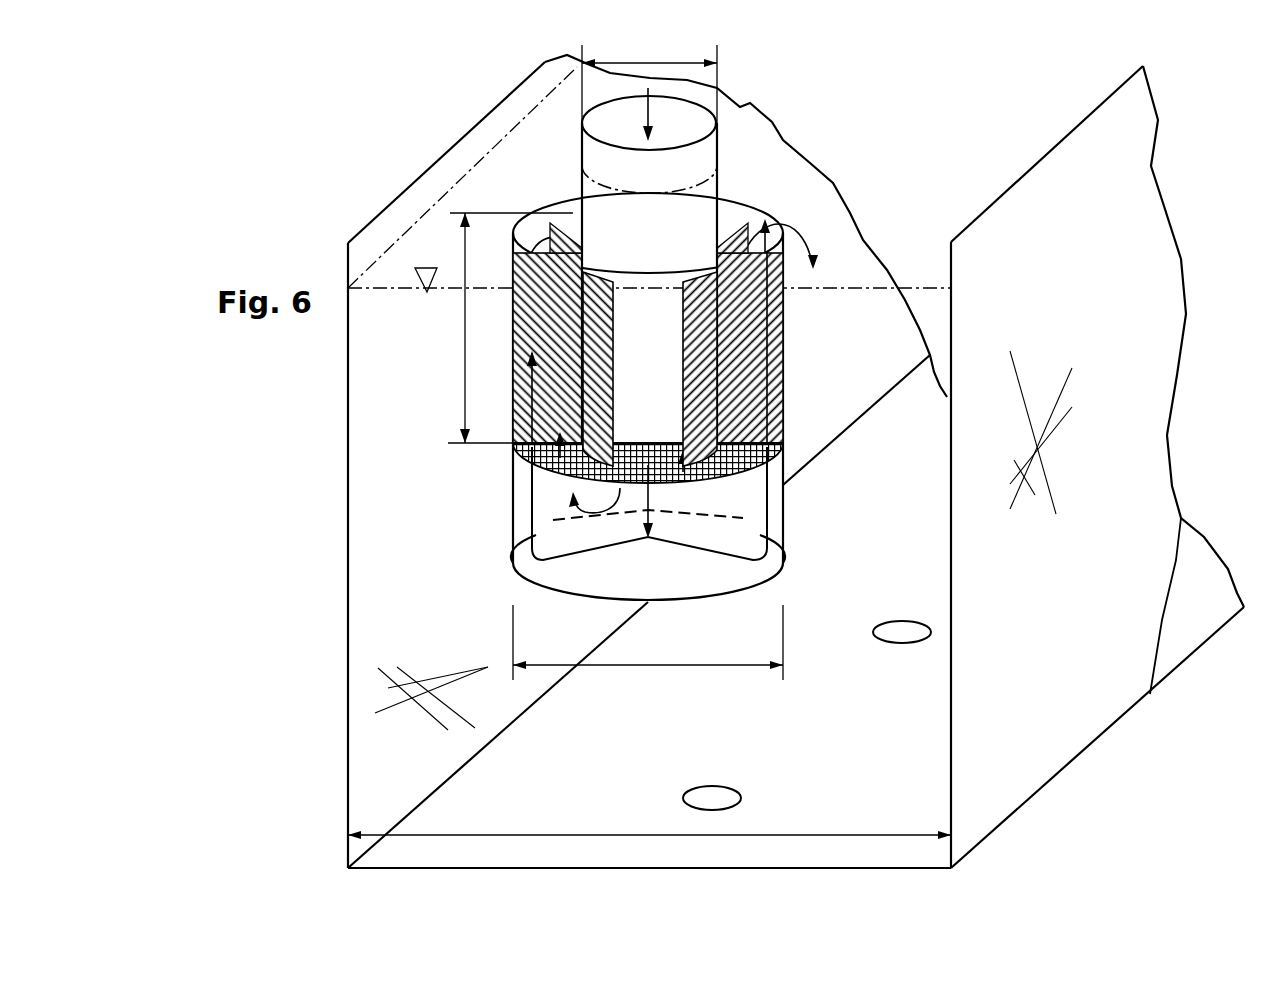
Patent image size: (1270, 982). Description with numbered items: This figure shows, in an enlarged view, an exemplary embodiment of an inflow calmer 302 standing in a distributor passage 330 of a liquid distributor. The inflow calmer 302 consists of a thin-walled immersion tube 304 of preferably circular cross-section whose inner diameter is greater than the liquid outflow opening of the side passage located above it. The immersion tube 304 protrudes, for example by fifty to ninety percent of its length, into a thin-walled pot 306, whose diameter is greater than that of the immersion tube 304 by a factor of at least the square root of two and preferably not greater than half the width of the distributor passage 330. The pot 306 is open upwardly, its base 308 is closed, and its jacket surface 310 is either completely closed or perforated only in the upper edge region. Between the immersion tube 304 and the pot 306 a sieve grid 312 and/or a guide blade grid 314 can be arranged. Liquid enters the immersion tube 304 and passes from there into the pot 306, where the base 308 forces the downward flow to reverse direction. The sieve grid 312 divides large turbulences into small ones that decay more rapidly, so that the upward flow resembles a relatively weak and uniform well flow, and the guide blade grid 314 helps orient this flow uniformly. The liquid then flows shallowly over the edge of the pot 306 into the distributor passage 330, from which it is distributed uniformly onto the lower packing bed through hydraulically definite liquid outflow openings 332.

The inflow calmer 302 is at (782, 461).
The immersion tube 304 is at (598, 165).
The pot 306 is at (745, 196).
The base 308 is at (550, 572).
The jacket surface 310 is at (783, 540).
The sieve grid 312 is at (783, 448).
The guide blade grid 314 is at (783, 310).
The distributor passage 330 is at (347, 623).
The liquid outflow openings 332 is at (730, 802).